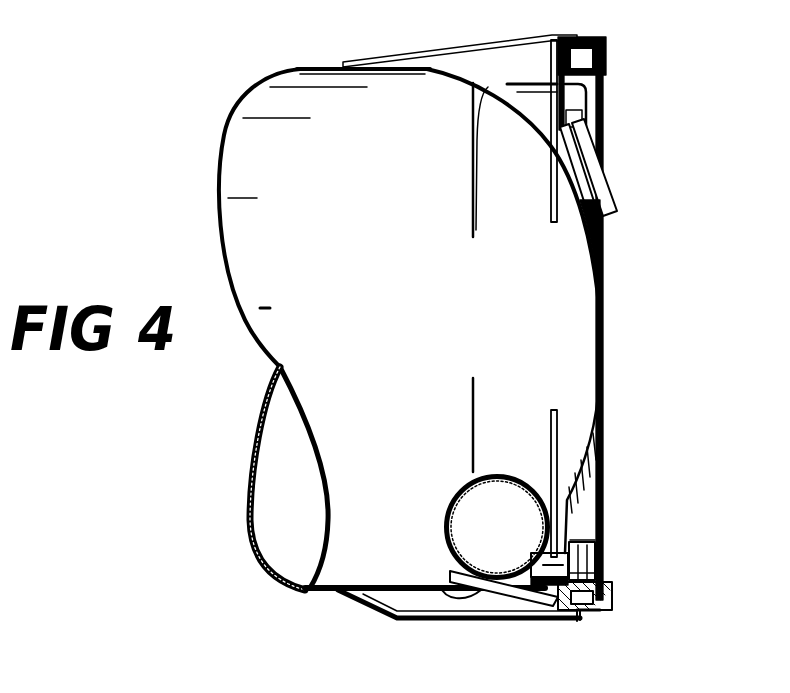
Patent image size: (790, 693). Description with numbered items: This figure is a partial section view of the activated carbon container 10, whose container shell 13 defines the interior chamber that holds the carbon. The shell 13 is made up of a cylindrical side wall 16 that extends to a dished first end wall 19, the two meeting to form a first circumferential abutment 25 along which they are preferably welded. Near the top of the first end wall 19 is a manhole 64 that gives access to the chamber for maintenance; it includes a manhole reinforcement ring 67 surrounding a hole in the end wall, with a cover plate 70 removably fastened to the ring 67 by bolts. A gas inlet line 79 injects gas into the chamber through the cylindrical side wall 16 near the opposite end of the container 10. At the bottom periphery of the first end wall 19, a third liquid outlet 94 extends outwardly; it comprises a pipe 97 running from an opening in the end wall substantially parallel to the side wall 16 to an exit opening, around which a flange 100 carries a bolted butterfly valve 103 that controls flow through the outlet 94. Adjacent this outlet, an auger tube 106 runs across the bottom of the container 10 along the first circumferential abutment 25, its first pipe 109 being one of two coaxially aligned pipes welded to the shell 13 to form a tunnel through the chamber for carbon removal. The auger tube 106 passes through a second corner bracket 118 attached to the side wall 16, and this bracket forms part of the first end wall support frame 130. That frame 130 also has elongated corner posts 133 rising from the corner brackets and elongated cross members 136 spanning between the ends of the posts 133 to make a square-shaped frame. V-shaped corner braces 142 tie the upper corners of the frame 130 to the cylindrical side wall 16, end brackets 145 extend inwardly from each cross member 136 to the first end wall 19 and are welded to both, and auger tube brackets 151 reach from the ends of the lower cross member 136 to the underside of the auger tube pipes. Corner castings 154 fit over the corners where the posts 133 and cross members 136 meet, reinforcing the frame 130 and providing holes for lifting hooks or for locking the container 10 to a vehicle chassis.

The container 10 is at (703, 109).
The container shell 13 is at (305, 56).
The cylindrical side wall 16 is at (311, 186).
The first end wall 19 is at (555, 344).
The first circumferential abutment 25 is at (471, 215).
The manhole 64 is at (621, 186).
The manhole reinforcement ring 67 is at (607, 227).
The cover plate 70 is at (606, 165).
The gas inlet line 79 is at (532, 80).
The third liquid outlet 94 is at (585, 521).
The pipe 97 is at (543, 592).
The flange 100 is at (590, 613).
The butterfly valve 103 is at (598, 550).
The auger tube 106 is at (437, 500).
The first pipe 109 is at (463, 553).
The second corner bracket 118 is at (474, 625).
The first end wall support frame 130 is at (613, 431).
The elongated corner posts 133 is at (600, 458).
The elongated cross members 136 is at (608, 52).
The V-shaped corner braces 142 is at (413, 58).
The end brackets 145 is at (551, 195).
The auger tube brackets 151 is at (441, 583).
The corner castings 154 is at (607, 43).